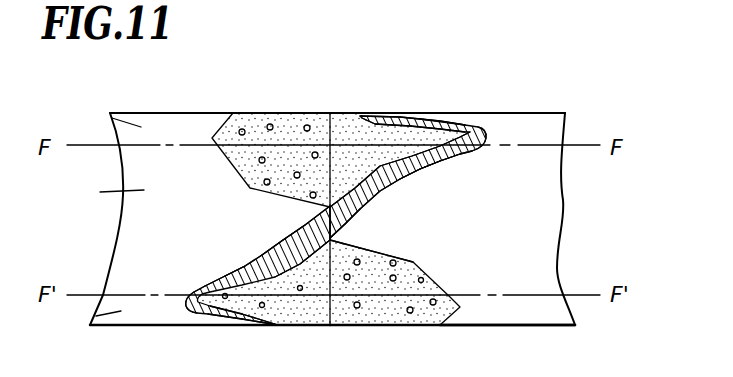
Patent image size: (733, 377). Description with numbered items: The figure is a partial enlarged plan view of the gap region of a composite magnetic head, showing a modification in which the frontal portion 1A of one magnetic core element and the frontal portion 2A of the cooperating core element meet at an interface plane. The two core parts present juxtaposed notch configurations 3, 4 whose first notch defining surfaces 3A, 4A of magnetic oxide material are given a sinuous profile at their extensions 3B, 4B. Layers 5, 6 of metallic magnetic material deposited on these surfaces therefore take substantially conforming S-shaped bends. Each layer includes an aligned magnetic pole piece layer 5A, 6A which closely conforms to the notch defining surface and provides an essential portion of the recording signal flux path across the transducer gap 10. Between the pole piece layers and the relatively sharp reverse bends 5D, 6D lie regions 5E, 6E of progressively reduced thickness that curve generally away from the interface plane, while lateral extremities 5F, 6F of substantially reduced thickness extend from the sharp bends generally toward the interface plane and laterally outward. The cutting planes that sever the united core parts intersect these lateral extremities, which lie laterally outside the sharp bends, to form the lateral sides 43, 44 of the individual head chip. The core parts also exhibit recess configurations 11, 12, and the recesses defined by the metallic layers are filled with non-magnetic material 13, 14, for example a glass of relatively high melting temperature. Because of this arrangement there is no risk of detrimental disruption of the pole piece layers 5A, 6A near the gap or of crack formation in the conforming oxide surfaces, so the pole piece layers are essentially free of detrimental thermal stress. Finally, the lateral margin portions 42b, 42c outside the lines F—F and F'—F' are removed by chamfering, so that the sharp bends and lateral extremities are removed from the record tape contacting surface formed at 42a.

The frontal portion 1A is at (538, 234).
The frontal portion 2A is at (128, 232).
The notch configuration 3 is at (485, 157).
The first notch defining surface 3A is at (420, 170).
The extension of the first notch defining surface 3B is at (440, 121).
The notch configuration 4 is at (171, 310).
The first notch defining surface 4A is at (252, 262).
The extension of the first notch defining surface 4B is at (201, 287).
The layer of metallic magnetic material 5 is at (384, 196).
The magnetic pole piece layer 5A is at (352, 218).
The relatively sharp reverse bend 5D is at (483, 128).
The region of progressively reduced thickness 5E is at (445, 157).
The lateral extremity 5F is at (410, 122).
The layer of metallic magnetic material 6 is at (284, 238).
The magnetic pole piece layer 6A is at (313, 233).
The relatively sharp reverse bend 6D is at (190, 312).
The region of progressively reduced thickness 6E is at (228, 272).
The lateral extremity 6F is at (257, 321).
The transducer gap 10 is at (332, 239).
The recess configuration 11 is at (424, 279).
The recess configuration 12 is at (220, 128).
The non-magnetic material 13 is at (347, 160).
The non-magnetic material 14 is at (317, 310).
The record tape contacting surface 42a is at (100, 192).
The lateral margin portion 42b is at (112, 118).
The lateral margin portion 42c is at (96, 316).
The lateral side 43 is at (557, 112).
The lateral side 44 is at (512, 326).